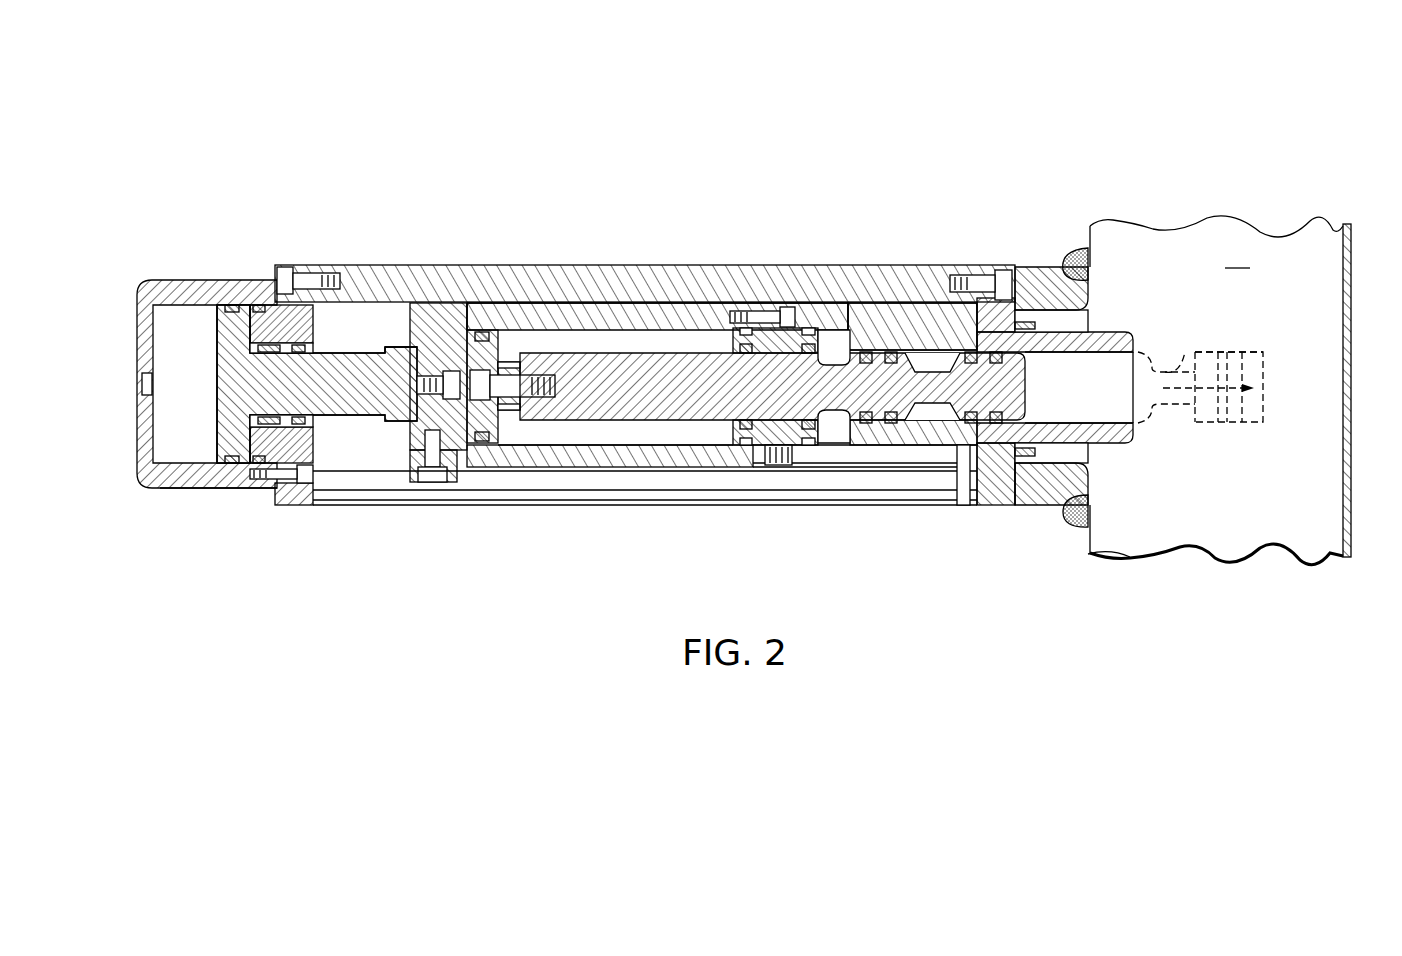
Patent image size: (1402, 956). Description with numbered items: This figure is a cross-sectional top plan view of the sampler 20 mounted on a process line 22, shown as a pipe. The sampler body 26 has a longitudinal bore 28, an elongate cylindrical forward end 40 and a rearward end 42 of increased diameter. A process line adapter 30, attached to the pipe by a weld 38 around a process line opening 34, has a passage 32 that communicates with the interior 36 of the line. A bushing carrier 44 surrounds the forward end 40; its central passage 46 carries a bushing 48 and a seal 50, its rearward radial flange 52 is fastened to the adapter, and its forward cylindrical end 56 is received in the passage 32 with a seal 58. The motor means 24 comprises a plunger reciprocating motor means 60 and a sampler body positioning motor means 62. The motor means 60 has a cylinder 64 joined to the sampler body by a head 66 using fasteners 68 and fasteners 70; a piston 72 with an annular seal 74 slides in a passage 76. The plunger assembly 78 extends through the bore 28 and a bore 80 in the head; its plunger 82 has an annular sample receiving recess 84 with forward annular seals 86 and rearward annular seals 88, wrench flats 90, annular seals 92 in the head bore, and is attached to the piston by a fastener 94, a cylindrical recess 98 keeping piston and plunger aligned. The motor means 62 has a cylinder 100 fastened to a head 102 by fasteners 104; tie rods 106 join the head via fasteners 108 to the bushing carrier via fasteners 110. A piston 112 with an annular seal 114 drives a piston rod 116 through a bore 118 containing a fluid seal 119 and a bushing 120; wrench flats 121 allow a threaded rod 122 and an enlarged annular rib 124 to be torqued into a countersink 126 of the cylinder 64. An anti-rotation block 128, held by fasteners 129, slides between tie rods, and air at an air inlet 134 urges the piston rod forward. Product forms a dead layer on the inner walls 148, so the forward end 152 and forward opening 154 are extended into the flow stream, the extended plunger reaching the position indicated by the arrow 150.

The sampler 20 is at (600, 103).
The process line 22 is at (1352, 305).
The motor means 24 is at (658, 190).
The sampler body 26 is at (912, 352).
The longitudinal bore 28 is at (1150, 372).
The process line adapter 30 is at (1030, 290).
The passage 32 is at (1095, 345).
The process line opening 34 is at (1094, 512).
The interior 36 is at (1238, 256).
The weld 38 is at (1072, 522).
The cylindrical forward end 40 is at (1100, 436).
The cylindrical rearward end 42 is at (822, 300).
The bushing carrier 44 is at (990, 482).
The central passage 46 is at (1060, 445).
The bushing 48 is at (1028, 447).
The seal 50 is at (1040, 492).
The radial flange 52 is at (978, 492).
The forward cylindrical end 56 is at (1078, 262).
The seal 58 is at (1003, 297).
The sampler plunger reciprocating motor means 60 is at (611, 210).
The sampler body positioning motor means 62 is at (180, 240).
The cylinder 64 is at (585, 472).
The head 66 is at (796, 467).
The fasteners 68 is at (955, 478).
The fasteners 70 is at (778, 308).
The piston 72 is at (485, 444).
The annular seal 74 is at (477, 447).
The passage 76 is at (620, 458).
The plunger assembly 78 is at (672, 400).
The bore 80 is at (615, 431).
The plunger 82 is at (1263, 422).
The sample receiving recess 84 is at (1178, 355).
The annular seals 86 is at (968, 352).
The annular seals 88 is at (866, 352).
The wrench flats 90 is at (836, 340).
The annular seals 92 is at (755, 386).
The fastener 94 is at (480, 335).
The cylindrical recess 98 is at (525, 373).
The cylinder 100 is at (205, 485).
The head 102 is at (290, 500).
The fasteners 104 is at (300, 490).
The tie rods 106 is at (590, 280).
The fasteners 108 is at (283, 270).
The fasteners 110 is at (990, 282).
The piston 112 is at (180, 478).
The annular seal 114 is at (225, 305).
The piston rod 116 is at (335, 416).
The bore 118 is at (300, 362).
The fluid seal 119 is at (290, 397).
The bushing 120 is at (293, 374).
The wrench flats 121 is at (398, 356).
The threaded rod 122 is at (436, 372).
The enlarged annular rib 124 is at (410, 415).
The countersink 126 is at (402, 349).
The anti-rotation block 128 is at (413, 475).
The fasteners 129 is at (432, 476).
The air inlet 134 is at (141, 383).
The inner walls 148 is at (1130, 558).
The arrow 150 is at (1263, 352).
The forward end 152 is at (1146, 422).
The forward opening 154 is at (1135, 402).